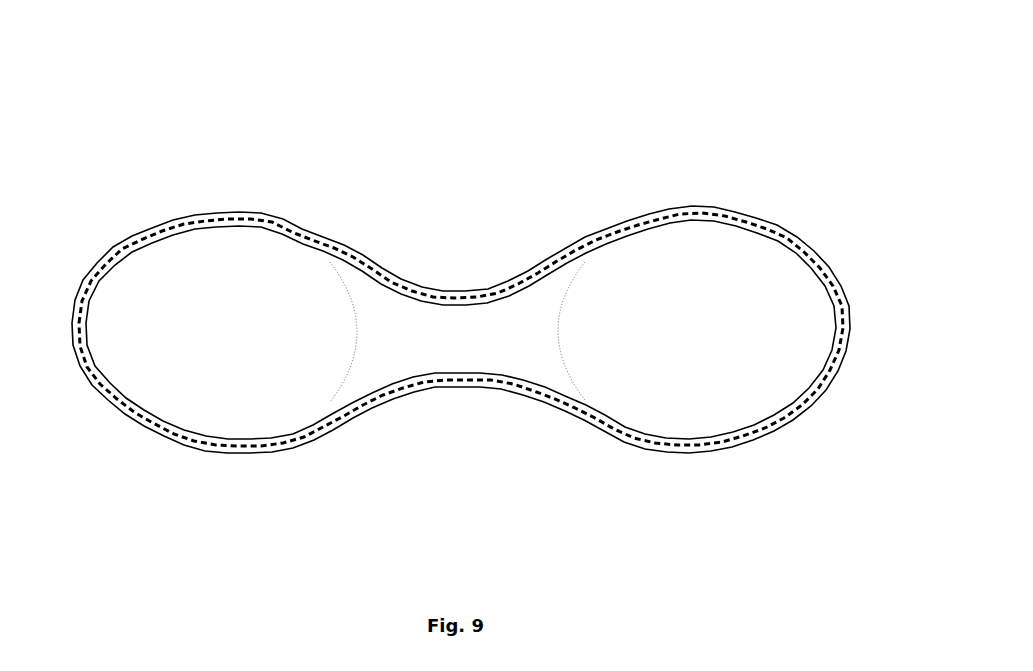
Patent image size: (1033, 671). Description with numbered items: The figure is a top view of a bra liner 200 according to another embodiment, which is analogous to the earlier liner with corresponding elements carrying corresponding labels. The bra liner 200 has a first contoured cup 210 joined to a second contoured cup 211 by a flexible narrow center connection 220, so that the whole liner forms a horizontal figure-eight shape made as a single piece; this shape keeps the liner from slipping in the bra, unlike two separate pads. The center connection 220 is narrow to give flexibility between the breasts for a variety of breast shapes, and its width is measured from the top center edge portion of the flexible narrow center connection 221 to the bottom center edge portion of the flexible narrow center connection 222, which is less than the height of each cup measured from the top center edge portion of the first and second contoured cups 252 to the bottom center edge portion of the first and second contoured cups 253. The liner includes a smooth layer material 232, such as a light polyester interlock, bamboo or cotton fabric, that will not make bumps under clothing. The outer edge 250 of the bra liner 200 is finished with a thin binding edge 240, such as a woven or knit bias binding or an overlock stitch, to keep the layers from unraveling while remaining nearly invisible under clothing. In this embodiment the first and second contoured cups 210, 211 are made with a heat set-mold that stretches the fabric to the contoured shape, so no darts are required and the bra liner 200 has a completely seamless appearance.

The bra liner 200 is at (425, 569).
The first contoured cup 210 is at (157, 318).
The second contoured cup 211 is at (710, 260).
The flexible narrow center connection 220 is at (442, 330).
The top center edge portion of the flexible narrow center connection 221 is at (460, 305).
The bottom center edge portion of the flexible narrow center connection 222 is at (463, 373).
The smooth layer material 232 is at (253, 375).
The binding edge 240 is at (843, 318).
The outer edge 250 is at (90, 285).
The top center edge portion of the first and second contoured cups 252 is at (213, 225).
The bottom center edge portion of the first and second contoured cups 253 is at (212, 440).